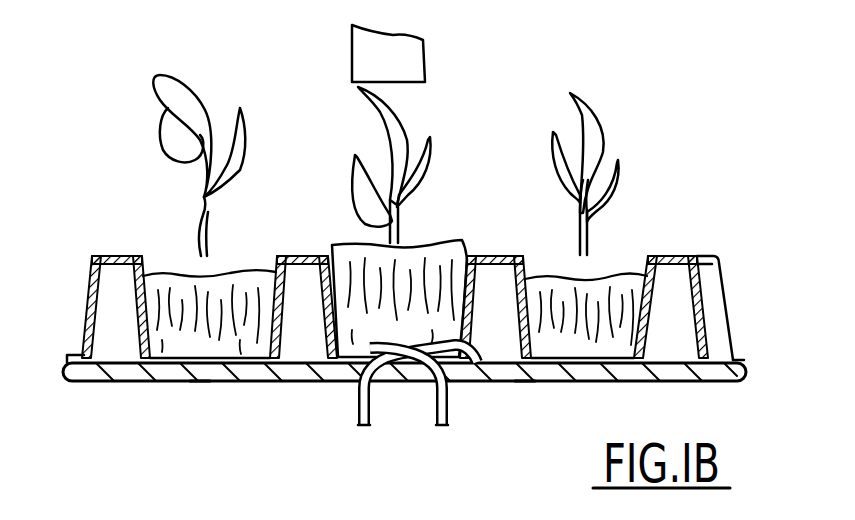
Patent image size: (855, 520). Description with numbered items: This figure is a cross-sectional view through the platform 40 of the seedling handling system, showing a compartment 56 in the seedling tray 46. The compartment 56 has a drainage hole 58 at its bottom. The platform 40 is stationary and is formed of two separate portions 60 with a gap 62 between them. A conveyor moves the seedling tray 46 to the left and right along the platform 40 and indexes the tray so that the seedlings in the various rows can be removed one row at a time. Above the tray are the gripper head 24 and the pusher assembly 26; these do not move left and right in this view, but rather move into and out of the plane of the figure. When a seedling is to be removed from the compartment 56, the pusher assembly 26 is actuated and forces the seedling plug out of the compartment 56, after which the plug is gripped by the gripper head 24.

The gripper head 24 is at (418, 58).
The pusher assembly 26 is at (355, 417).
The platform 40 is at (108, 372).
The seedling tray 46 is at (132, 255).
The compartment 56 is at (455, 245).
The drainage hole 58 is at (238, 362).
The separate portions 60 is at (200, 381).
The gap 62 is at (354, 392).